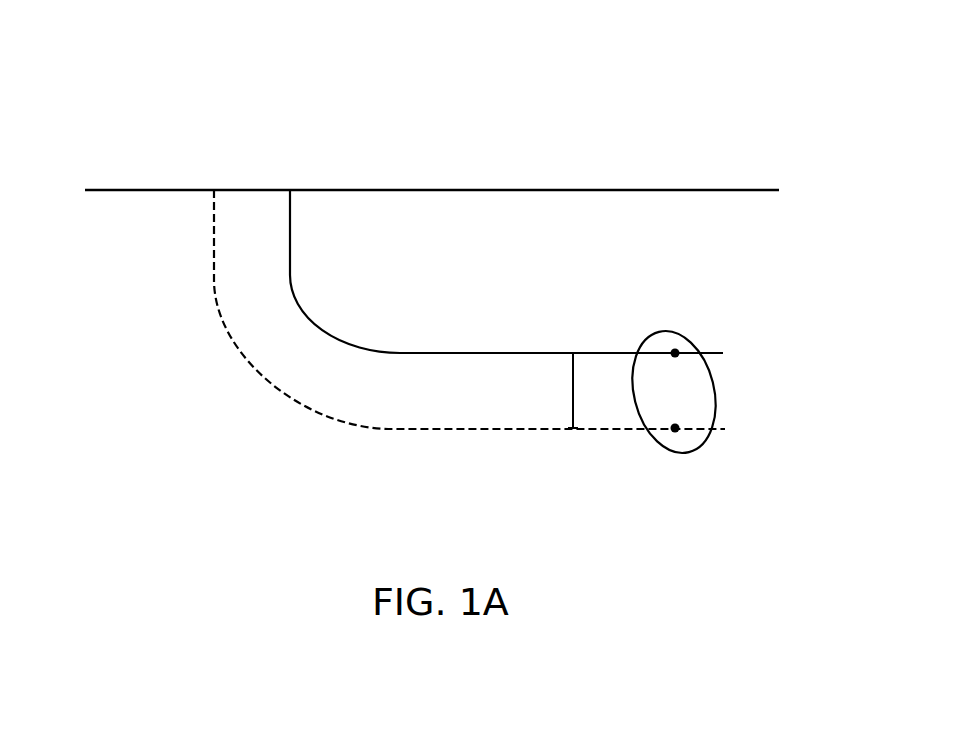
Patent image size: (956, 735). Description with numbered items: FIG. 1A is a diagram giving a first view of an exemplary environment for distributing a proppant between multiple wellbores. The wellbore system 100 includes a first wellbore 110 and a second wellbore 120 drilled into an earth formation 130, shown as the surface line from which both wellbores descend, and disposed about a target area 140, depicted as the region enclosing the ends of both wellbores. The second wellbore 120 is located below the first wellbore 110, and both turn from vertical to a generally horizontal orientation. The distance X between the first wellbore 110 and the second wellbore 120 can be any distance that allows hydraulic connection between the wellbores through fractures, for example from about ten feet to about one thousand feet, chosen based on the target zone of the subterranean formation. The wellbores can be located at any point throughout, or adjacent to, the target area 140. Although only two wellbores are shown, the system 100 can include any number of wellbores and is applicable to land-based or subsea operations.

The wellbore system 100 is at (708, 48).
The first wellbore 110 is at (324, 331).
The second wellbore 120 is at (272, 388).
The earth formation 130 is at (381, 190).
The target area 140 is at (685, 340).